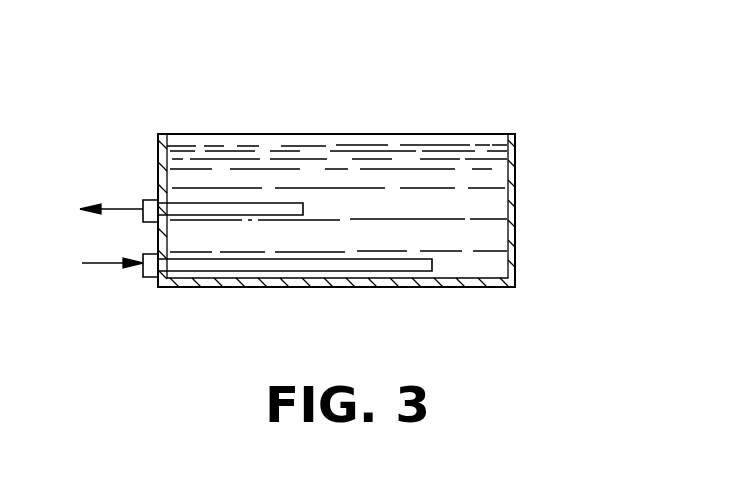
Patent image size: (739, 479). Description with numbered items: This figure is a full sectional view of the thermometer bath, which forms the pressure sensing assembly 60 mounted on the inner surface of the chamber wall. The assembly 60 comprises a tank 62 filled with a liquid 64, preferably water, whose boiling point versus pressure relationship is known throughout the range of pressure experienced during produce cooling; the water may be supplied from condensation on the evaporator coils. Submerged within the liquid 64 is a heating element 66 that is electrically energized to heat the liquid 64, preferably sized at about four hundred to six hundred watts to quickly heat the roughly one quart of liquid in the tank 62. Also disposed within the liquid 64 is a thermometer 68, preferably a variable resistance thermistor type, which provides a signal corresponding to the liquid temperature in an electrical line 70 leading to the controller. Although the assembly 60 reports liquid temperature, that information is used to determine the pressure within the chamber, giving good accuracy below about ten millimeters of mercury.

The pressure sensing assembly 60 is at (490, 118).
The tank 62 is at (503, 218).
The liquid 64 is at (308, 168).
The heating element 66 is at (375, 260).
The thermometer 68 is at (192, 206).
The electrical line 70 is at (120, 205).